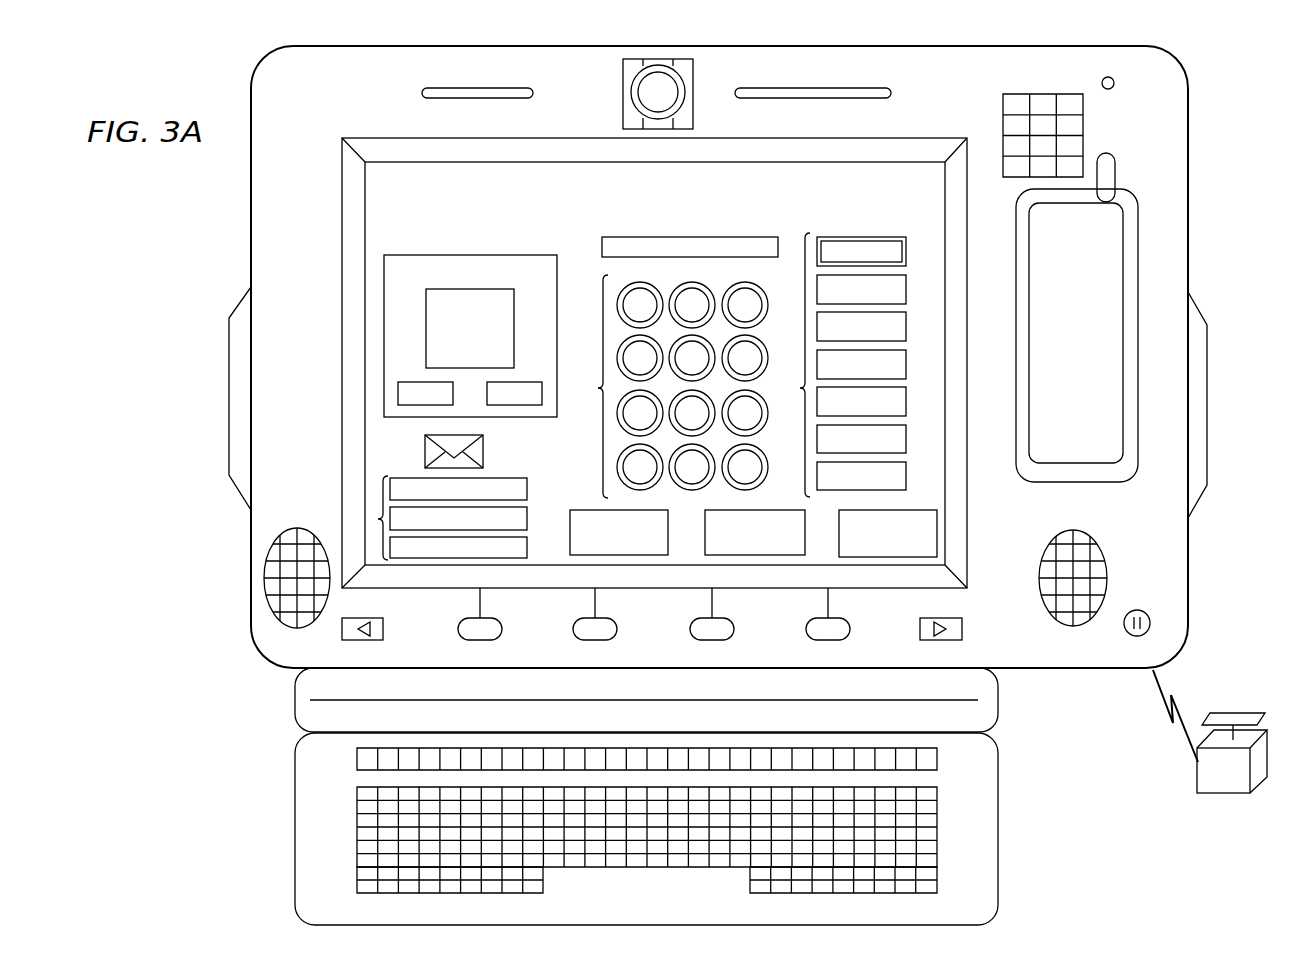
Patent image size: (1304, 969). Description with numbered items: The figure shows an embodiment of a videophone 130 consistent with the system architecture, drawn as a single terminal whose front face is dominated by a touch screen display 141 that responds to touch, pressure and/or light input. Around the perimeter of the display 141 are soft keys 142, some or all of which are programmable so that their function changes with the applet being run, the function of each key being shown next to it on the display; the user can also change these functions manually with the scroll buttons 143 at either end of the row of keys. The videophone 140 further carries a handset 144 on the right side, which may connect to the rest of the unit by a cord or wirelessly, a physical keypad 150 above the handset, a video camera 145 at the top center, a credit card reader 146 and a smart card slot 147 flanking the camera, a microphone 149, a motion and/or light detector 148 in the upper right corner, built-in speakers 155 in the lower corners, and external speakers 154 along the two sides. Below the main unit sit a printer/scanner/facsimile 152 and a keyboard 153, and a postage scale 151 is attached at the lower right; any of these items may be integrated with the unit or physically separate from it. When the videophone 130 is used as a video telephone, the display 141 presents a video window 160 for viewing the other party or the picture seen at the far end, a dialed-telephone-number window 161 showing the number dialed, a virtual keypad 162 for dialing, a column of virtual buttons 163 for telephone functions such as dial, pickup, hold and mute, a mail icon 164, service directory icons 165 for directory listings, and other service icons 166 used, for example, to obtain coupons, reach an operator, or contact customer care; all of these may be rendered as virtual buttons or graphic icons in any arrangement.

The videophone 130 is at (1203, 71).
The videophone 140 is at (1188, 128).
The touch screen display 141 is at (343, 278).
The soft keys 142 is at (502, 626).
The scroll buttons 143 is at (383, 626).
The handset 144 is at (1089, 337).
The video camera 145 is at (622, 72).
The credit card reader 146 is at (455, 98).
The smart card slot 147 is at (858, 98).
The motion and/or light detector 148 is at (1114, 87).
The microphone 149 is at (1133, 609).
The keypad 150 is at (1006, 94).
The postage scale 151 is at (1197, 780).
The printer/scanner/facsimile 152 is at (998, 698).
The keyboard 153 is at (998, 828).
The external speakers 154 is at (229, 412).
The built-in speakers 155 is at (267, 605).
The video window 160 is at (533, 266).
The dialed-telephone-number window 161 is at (703, 249).
The virtual keypad 162 is at (664, 386).
The virtual buttons 163 is at (837, 365).
The mail icon 164 is at (483, 452).
The service directory icons 165 is at (376, 519).
The service icons 166 is at (583, 510).